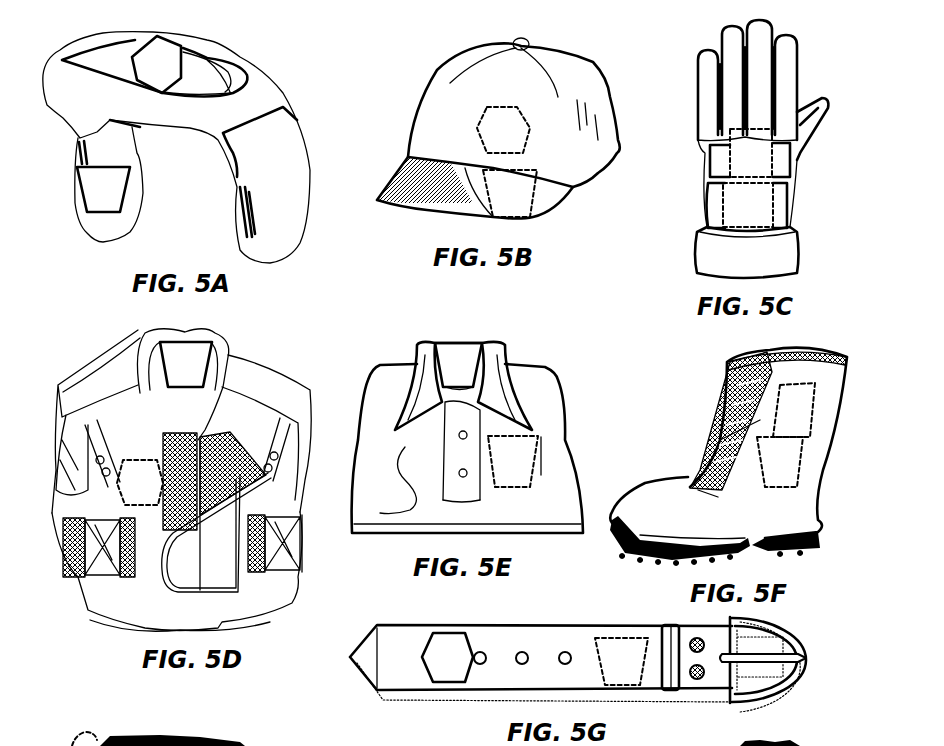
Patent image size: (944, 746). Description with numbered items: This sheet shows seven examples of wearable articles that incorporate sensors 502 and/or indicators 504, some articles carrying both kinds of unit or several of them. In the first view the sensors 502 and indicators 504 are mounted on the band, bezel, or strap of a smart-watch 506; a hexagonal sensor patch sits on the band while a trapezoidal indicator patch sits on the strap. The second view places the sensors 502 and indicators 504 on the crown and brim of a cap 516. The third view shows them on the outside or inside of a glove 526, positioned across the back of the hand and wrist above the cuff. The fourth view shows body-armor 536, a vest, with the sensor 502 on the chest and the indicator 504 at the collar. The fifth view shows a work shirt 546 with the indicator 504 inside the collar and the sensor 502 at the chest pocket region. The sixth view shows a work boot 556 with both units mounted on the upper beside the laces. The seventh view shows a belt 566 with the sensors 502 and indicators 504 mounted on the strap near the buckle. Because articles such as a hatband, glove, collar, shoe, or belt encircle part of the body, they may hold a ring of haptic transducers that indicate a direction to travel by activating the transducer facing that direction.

In FIG. 5A, the sensors 502 is at (141, 63).
In FIG. 5B, the sensors 502 is at (493, 129).
In FIG. 5C, the sensors 502 is at (737, 154).
In FIG. 5D, the sensors 502 is at (128, 482).
In FIG. 5E, the sensors 502 is at (501, 462).
In FIG. 5F, the sensors 502 is at (785, 409).
In FIG. 5G, the sensors 502 is at (438, 659).
In FIG. 5A, the indicators 504 is at (93, 190).
In FIG. 5B, the indicators 504 is at (500, 196).
In FIG. 5C, the indicators 504 is at (738, 209).
In FIG. 5D, the indicators 504 is at (175, 362).
In FIG. 5E, the indicators 504 is at (447, 364).
In FIG. 5F, the indicators 504 is at (770, 462).
In FIG. 5G, the indicators 504 is at (610, 662).
In FIG. 5A, the smart-watch 506 is at (256, 178).
In FIG. 5B, the cap 516 is at (437, 150).
In FIG. 5C, the glove 526 is at (730, 259).
In FIG. 5D, the body-armor 536 is at (179, 616).
In FIG. 5E, the work shirt 546 is at (453, 514).
In FIG. 5F, the work boot 556 is at (734, 522).
In FIG. 5G, the belt 566 is at (386, 664).